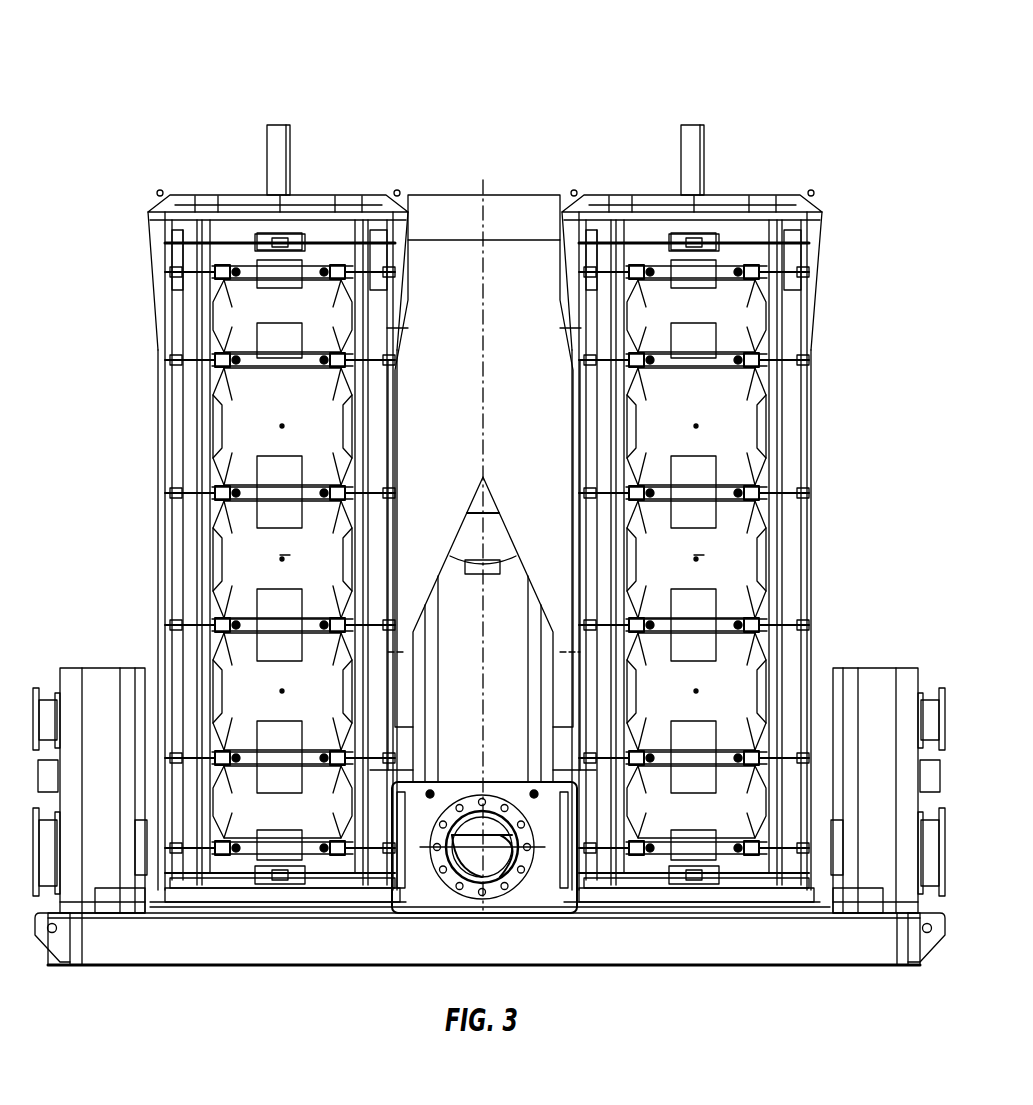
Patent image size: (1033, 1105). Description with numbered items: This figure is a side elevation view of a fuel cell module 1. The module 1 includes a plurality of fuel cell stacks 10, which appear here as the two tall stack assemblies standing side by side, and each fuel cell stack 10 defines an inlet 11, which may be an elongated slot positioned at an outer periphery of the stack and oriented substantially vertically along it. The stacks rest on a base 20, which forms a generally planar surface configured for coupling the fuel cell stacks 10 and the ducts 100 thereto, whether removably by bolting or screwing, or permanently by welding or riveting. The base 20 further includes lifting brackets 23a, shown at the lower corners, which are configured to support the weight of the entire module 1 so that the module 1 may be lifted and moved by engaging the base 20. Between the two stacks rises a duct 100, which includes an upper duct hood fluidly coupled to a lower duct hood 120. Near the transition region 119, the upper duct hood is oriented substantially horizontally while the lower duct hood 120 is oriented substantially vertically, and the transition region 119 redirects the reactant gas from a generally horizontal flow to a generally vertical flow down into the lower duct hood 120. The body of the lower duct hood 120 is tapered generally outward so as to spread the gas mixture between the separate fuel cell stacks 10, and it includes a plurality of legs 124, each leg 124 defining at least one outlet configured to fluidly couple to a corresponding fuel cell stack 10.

The fuel cell module 1 is at (118, 120).
The fuel cell stack 10 is at (285, 432).
The inlet 11 is at (310, 575).
The base 20 is at (662, 950).
The lifting bracket 23a is at (58, 952).
The duct 100 is at (491, 520).
The transition region 119 is at (455, 216).
The lower duct hood 120 is at (433, 346).
The leg 124 is at (405, 652).